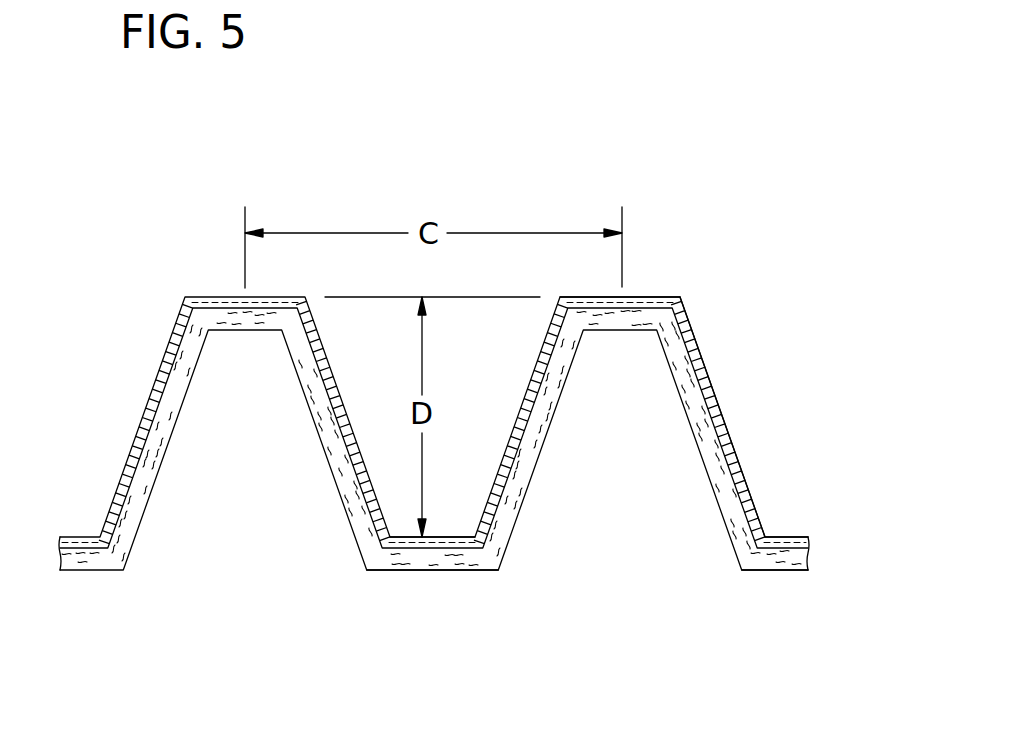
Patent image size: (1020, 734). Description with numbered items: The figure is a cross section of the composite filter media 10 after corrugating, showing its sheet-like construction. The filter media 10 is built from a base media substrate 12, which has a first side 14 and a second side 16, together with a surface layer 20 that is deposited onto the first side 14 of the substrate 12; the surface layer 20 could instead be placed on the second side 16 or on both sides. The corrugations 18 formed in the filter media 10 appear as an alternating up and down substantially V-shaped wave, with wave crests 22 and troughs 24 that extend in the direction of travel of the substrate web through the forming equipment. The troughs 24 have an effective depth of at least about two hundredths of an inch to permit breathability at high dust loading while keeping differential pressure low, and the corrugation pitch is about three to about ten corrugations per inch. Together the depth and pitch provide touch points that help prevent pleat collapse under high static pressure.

The composite filter media 10 is at (444, 388).
The base media substrate 12 is at (728, 492).
The first side 14 is at (775, 538).
The second side 16 is at (775, 570).
The corrugations 18 is at (393, 605).
The surface layer 20 is at (738, 446).
The wave crests 22 is at (647, 292).
The troughs 24 is at (443, 502).